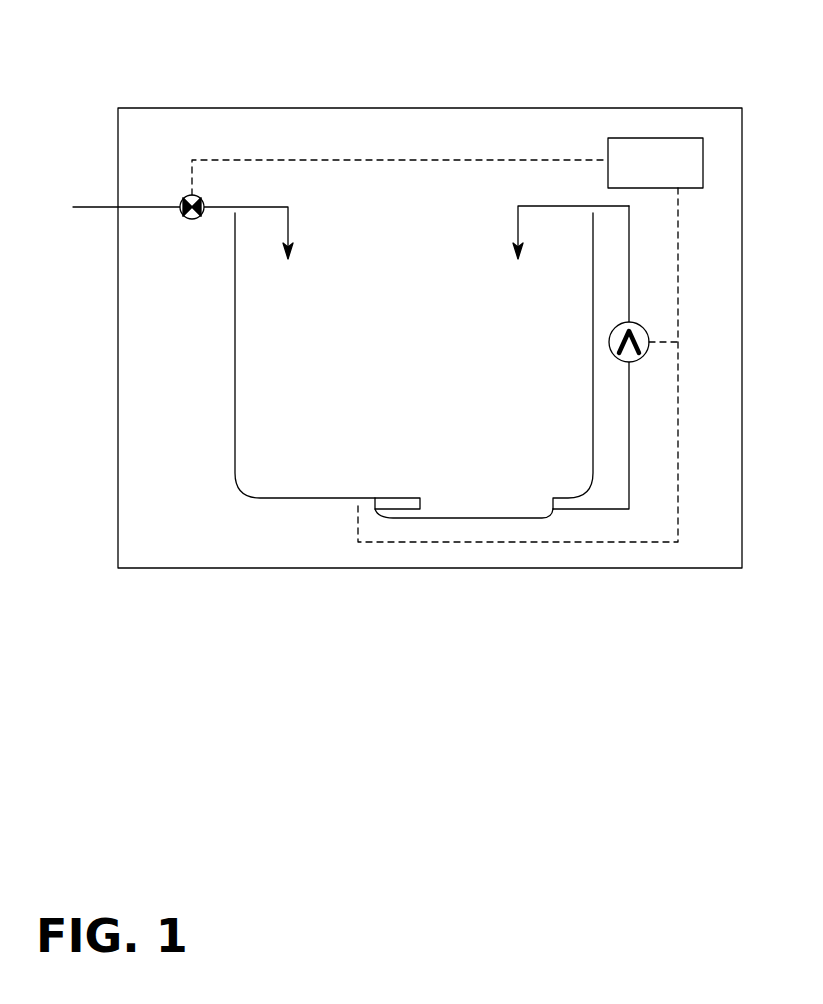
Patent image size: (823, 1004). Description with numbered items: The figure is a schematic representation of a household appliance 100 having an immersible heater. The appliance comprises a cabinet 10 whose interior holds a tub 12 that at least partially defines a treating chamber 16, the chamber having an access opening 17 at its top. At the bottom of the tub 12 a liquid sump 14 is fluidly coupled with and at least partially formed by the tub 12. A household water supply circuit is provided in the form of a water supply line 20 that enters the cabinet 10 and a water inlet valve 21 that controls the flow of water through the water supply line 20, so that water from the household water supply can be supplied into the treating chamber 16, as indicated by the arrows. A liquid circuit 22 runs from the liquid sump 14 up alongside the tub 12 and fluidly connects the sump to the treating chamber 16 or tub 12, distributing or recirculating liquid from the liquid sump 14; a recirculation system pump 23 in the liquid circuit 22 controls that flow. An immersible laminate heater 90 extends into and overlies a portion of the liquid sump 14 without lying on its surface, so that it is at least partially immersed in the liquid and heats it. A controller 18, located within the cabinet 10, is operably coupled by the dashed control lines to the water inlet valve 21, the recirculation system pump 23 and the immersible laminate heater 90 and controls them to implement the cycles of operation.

The household appliance 100 is at (418, 42).
The cabinet 10 is at (695, 108).
The water supply line 20 is at (93, 207).
The water inlet valve 21 is at (188, 200).
The tub 12 is at (593, 288).
The liquid circuit 22 is at (630, 407).
The liquid sump 14 is at (513, 518).
The immersible laminate heater 90 is at (395, 509).
The controller 18 is at (703, 162).
The recirculation system pump 23 is at (645, 325).
The access opening 17 is at (417, 218).
The treating chamber 16 is at (432, 344).